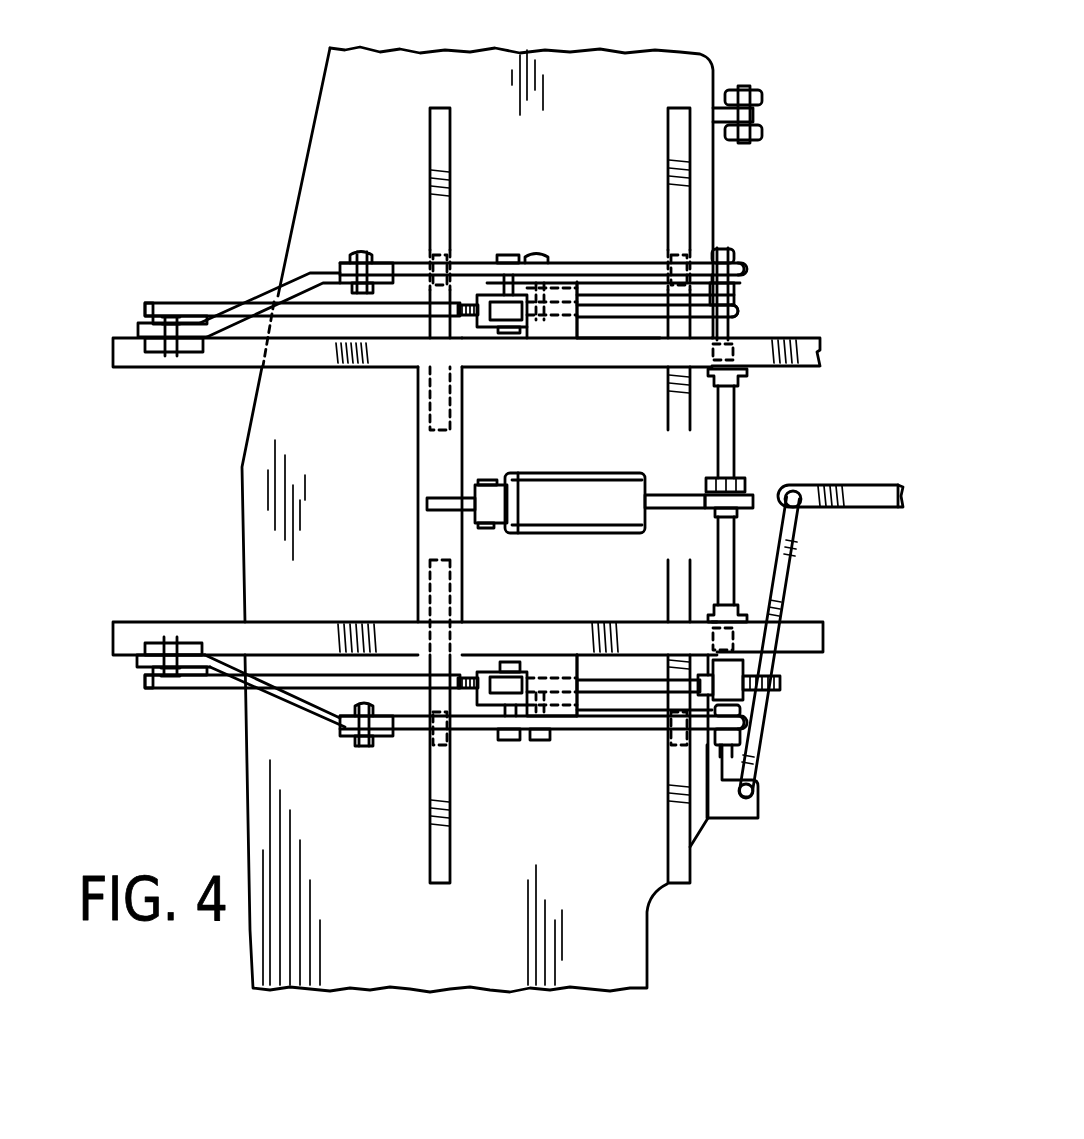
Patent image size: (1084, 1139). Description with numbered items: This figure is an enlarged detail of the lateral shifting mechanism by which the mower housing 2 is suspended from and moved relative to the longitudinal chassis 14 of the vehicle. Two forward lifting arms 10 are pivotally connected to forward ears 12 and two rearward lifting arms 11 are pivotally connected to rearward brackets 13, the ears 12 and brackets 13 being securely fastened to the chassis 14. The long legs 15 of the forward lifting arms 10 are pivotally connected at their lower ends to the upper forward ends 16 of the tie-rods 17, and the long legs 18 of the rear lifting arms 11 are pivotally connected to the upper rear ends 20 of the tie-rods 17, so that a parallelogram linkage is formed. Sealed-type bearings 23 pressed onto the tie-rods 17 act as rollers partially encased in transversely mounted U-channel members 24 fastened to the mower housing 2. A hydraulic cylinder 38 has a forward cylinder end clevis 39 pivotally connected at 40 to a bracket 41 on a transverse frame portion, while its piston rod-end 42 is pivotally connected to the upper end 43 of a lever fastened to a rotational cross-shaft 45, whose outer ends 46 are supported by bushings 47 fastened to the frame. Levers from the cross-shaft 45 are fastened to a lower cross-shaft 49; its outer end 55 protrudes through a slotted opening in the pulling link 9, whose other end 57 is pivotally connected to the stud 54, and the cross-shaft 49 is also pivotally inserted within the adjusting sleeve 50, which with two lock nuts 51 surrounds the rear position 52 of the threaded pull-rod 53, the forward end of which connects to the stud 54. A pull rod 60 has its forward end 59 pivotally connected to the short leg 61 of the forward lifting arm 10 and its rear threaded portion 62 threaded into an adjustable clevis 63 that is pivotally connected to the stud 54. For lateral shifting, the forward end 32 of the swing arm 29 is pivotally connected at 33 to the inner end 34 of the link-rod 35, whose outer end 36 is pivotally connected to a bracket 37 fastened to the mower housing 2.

The mower housing 2 is at (498, 937).
The pulling link 9 is at (640, 290).
The forward lifting arm 10 is at (278, 297).
The rearward lifting arm 11 is at (603, 265).
The forward ear 12 is at (160, 357).
The rearward bracket 13 is at (578, 340).
The longitudinal chassis 14 is at (313, 353).
The long leg of forward lifting arm 15 is at (382, 262).
The upper forward end of tie-rod 16 is at (403, 263).
The tie-rod 17 is at (577, 265).
The long leg of rear lifting arm 18 is at (700, 265).
The upper rear end of tie-rod 20 is at (747, 263).
The sealed-type bearing 23 is at (437, 250).
The U-channel member 24 is at (433, 126).
The swing arm 29 is at (893, 510).
The forward end of swing arm 32 is at (840, 485).
The pivotal connection 33 is at (807, 505).
The inner end of link-rod 34 is at (800, 540).
The link-rod 35 is at (778, 605).
The outer end of link-rod 36 is at (760, 788).
The bracket 37 is at (752, 812).
The hydraulic cylinder 38 is at (597, 520).
The forward cylinder end clevis 39 is at (518, 473).
The pivotal connection 40 is at (487, 482).
The bracket 41 is at (440, 498).
The piston rod-end 42 is at (755, 495).
The upper end of lever 43 is at (708, 478).
The rotational cross-shaft 45 is at (735, 410).
The outer end of rotational cross-shaft 46 is at (750, 376).
The bushing 47 is at (755, 338).
The lower cross-shaft 49 is at (718, 537).
The adjusting sleeve 50 is at (742, 703).
The lock nut 51 is at (693, 650).
The rear position of threaded pull-rod 52 is at (782, 683).
The threaded pull-rod 53 is at (630, 683).
The stud 54 is at (508, 262).
The outer end of lower cross-shaft 55 is at (740, 305).
The other end of pulling link 57 is at (563, 338).
The forward end of pull rod 59 is at (148, 303).
The pull rod 60 is at (247, 303).
The short leg of forward lifting arm 61 is at (138, 330).
The rear threaded portion of pull-rod 62 is at (485, 327).
The adjustable clevis 63 is at (480, 295).